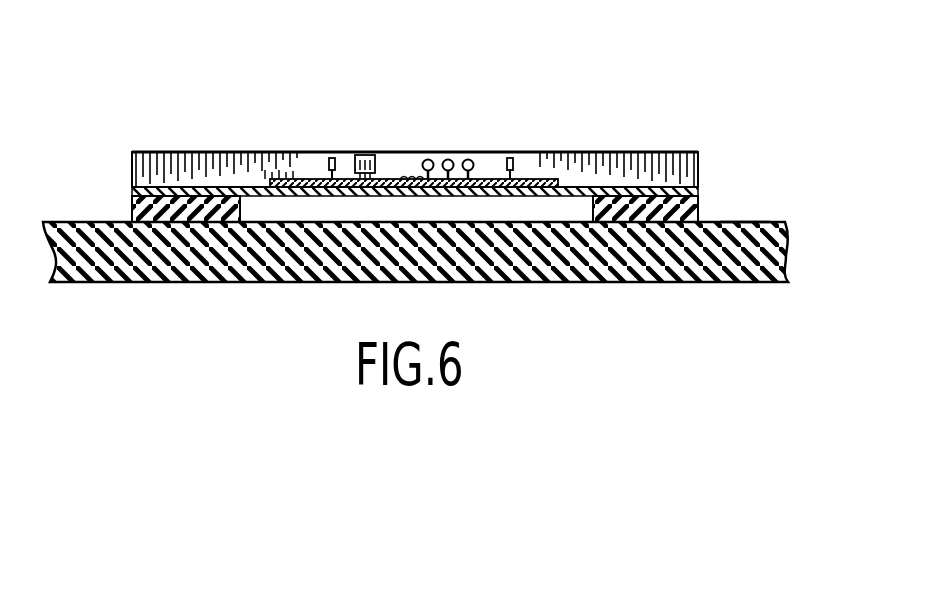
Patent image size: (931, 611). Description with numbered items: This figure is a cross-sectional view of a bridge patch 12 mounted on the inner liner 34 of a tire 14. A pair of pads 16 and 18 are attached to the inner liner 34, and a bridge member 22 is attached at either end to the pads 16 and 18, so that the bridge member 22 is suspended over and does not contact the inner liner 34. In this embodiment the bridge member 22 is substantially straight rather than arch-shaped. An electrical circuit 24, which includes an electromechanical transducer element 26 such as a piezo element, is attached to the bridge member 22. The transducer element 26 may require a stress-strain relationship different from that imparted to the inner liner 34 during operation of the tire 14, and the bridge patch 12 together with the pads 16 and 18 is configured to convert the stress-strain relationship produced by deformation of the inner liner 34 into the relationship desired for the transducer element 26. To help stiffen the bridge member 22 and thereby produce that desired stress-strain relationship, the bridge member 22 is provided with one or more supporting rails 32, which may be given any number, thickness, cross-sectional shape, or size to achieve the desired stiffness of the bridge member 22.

The bridge patch 12 is at (278, 66).
The tire 14 is at (738, 284).
The pad 16 is at (144, 213).
The pad 18 is at (646, 206).
The bridge member 22 is at (250, 190).
The electrical circuit 24 is at (457, 152).
The electromechanical transducer element 26 is at (371, 152).
The supporting rail 32 is at (572, 152).
The inner liner 34 is at (745, 212).